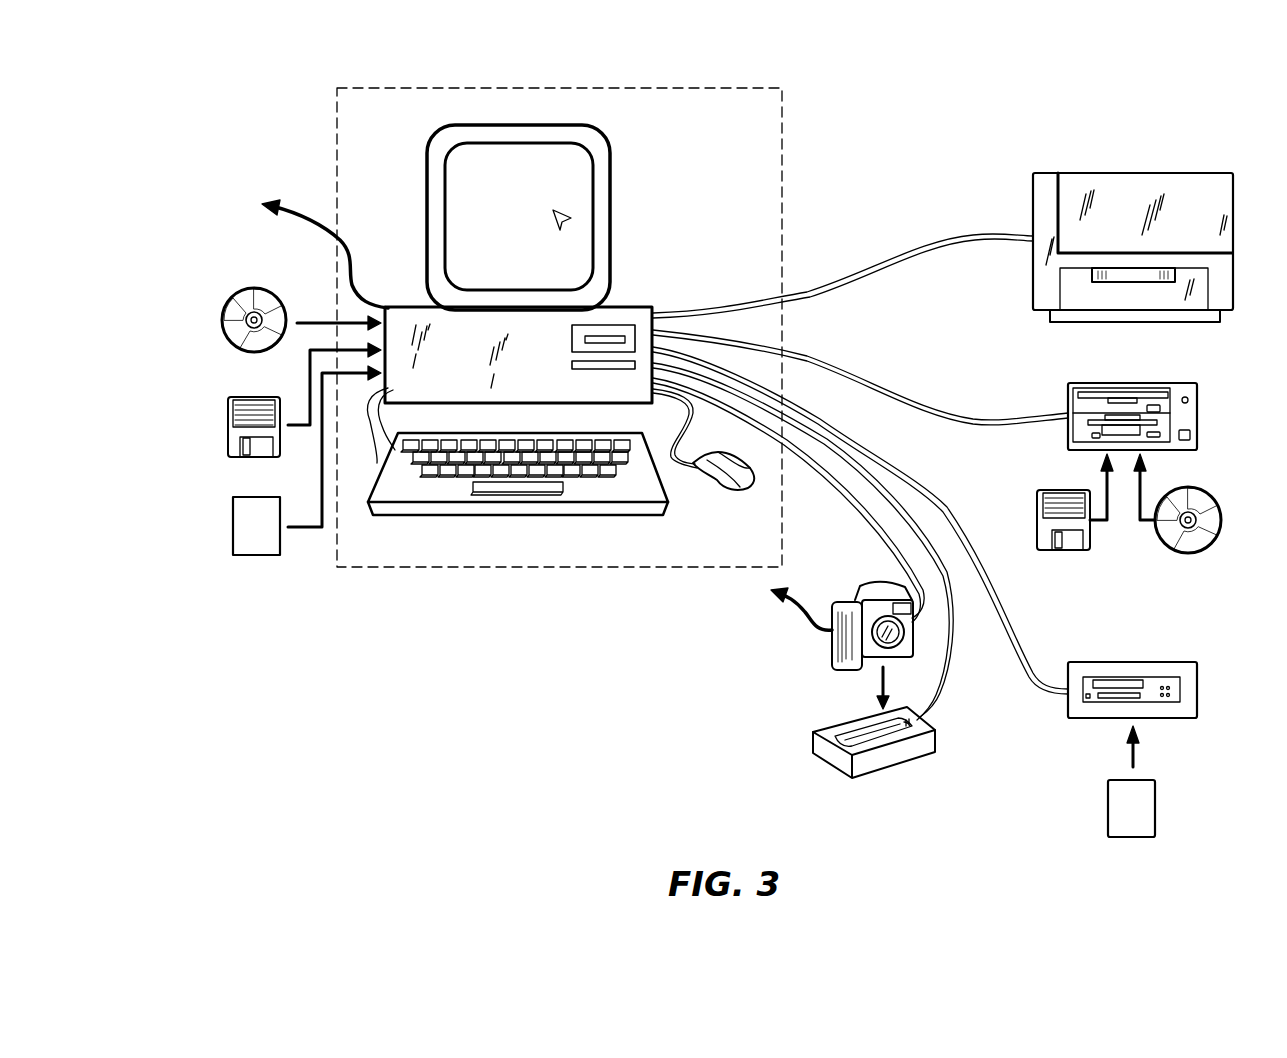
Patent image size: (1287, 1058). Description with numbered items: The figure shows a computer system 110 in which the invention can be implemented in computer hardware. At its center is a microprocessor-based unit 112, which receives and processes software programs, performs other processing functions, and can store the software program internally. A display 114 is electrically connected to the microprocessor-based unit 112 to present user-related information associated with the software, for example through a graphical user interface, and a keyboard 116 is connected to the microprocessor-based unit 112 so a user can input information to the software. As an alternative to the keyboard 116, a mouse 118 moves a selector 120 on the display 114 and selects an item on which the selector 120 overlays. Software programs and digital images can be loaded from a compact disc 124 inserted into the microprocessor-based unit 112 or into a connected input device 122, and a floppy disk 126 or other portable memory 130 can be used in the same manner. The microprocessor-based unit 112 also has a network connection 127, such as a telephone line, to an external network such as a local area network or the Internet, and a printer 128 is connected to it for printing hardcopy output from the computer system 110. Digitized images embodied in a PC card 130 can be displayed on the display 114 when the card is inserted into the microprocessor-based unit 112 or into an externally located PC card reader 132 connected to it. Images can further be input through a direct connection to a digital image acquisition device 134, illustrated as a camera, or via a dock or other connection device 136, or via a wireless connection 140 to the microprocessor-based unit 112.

The computer system 110 is at (335, 135).
The microprocessor-based unit 112 is at (412, 307).
The display 114 is at (440, 133).
The keyboard 116 is at (450, 517).
The mouse 118 is at (710, 477).
The selector 120 is at (571, 214).
The input device 122 is at (1198, 407).
The compact disc 124 is at (222, 320).
The floppy disk 126 is at (227, 430).
The network connection 127 is at (308, 228).
The printer 128 is at (1119, 173).
The personal computer card 130 is at (232, 528).
The PC card reader 132 is at (1197, 687).
The digital image acquisition device 134 is at (873, 580).
The dock 136 is at (812, 740).
The wireless connection 140 is at (798, 624).